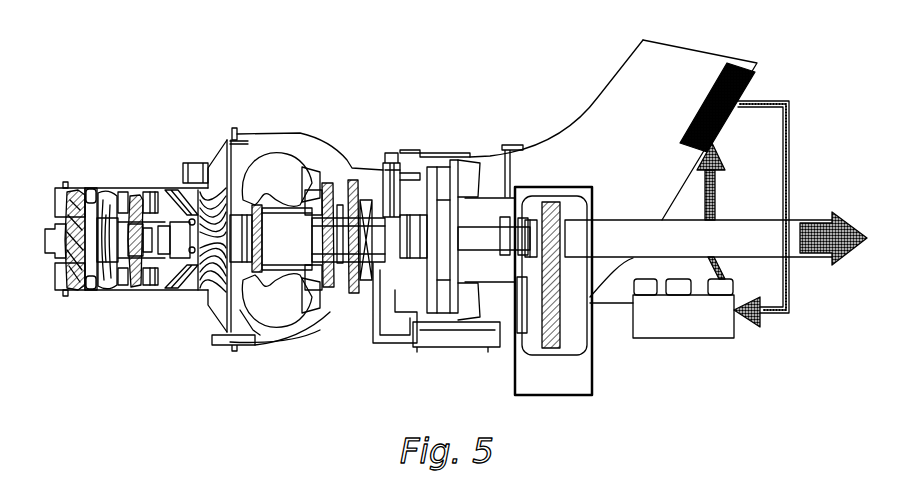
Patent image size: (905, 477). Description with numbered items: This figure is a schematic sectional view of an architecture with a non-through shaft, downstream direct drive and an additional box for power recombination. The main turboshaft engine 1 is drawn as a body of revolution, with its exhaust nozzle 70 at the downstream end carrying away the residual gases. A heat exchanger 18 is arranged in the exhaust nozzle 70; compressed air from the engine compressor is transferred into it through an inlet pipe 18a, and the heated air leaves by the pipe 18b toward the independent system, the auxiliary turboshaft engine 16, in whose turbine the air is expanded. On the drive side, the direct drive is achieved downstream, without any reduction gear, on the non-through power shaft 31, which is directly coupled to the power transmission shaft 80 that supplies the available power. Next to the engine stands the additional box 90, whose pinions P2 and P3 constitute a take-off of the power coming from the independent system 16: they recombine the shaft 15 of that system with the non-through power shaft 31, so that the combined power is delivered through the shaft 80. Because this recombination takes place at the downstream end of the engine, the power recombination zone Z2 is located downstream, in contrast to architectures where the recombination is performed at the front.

The main turboshaft engine 1 is at (410, 100).
The non-through power shaft 31 is at (531, 204).
The pinion P2 is at (551, 204).
The pinion P3 is at (537, 342).
The power recombination zone Z2 is at (512, 390).
The additional box 90 is at (570, 343).
The power transmission shaft 80 is at (621, 240).
The exhaust nozzle 70 is at (661, 125).
The heat exchanger 18 is at (720, 77).
The inlet pipe 18a is at (714, 190).
The pipe 18b is at (789, 155).
The auxiliary turboshaft engine 16 is at (683, 308).
The shaft 15 is at (613, 310).